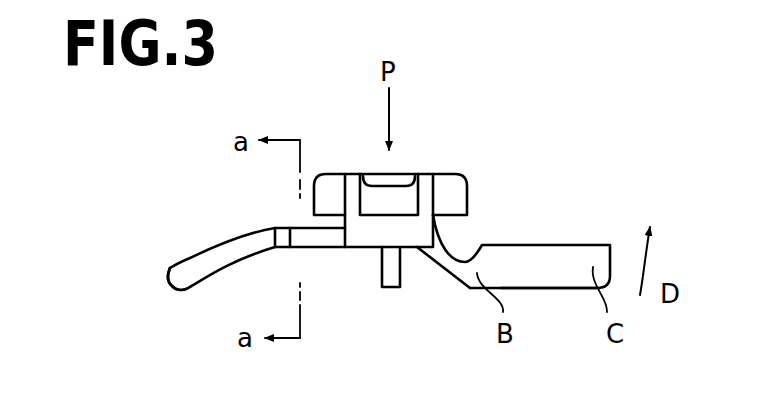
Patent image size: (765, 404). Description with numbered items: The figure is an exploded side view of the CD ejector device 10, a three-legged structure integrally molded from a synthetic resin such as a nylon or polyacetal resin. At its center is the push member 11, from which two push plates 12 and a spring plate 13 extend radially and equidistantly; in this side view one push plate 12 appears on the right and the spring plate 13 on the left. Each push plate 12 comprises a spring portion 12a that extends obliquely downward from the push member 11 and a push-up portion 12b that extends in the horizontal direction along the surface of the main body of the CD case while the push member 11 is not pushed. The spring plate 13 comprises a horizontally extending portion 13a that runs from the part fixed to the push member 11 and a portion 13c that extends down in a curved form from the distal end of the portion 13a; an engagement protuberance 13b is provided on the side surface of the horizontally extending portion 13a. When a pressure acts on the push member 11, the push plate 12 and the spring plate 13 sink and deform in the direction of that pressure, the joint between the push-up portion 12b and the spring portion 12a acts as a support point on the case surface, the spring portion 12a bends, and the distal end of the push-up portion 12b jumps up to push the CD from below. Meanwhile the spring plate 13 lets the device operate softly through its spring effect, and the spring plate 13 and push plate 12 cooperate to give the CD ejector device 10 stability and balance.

The CD ejector device 10 is at (435, 150).
The push member 11 is at (453, 177).
The push plate 12 is at (540, 243).
The spring portion 12a is at (445, 262).
The push-up portion 12b is at (528, 272).
The spring plate 13 is at (198, 253).
The horizontally extending portion 13a is at (320, 237).
The engagement protuberance 13b is at (283, 233).
The curved portion 13c is at (197, 282).